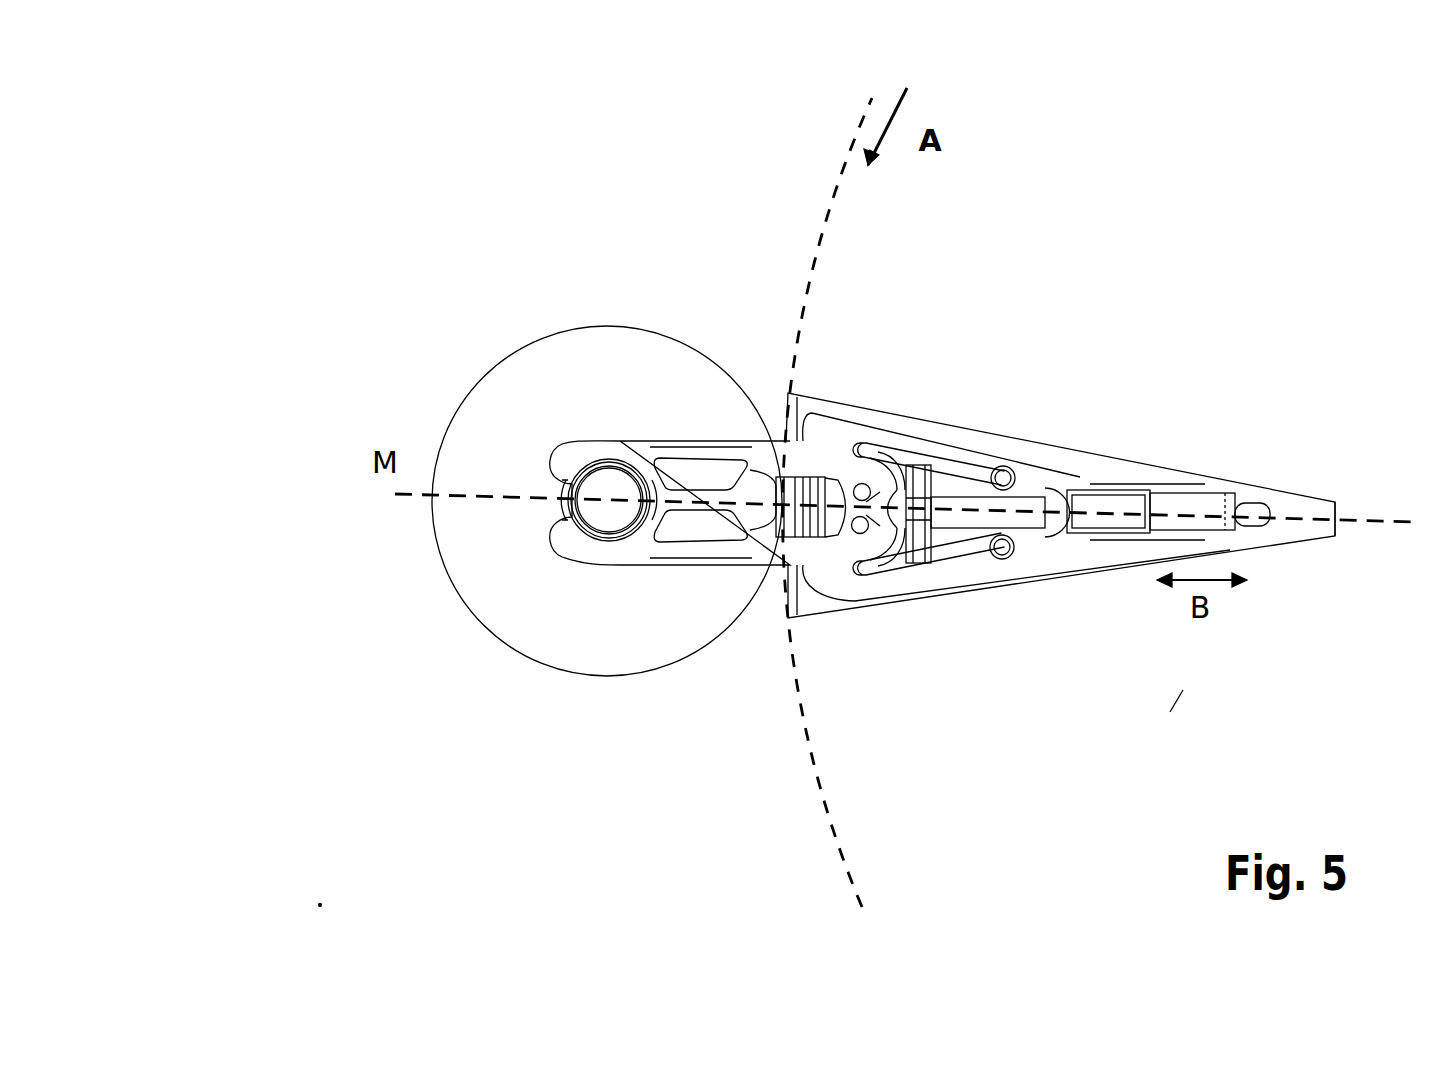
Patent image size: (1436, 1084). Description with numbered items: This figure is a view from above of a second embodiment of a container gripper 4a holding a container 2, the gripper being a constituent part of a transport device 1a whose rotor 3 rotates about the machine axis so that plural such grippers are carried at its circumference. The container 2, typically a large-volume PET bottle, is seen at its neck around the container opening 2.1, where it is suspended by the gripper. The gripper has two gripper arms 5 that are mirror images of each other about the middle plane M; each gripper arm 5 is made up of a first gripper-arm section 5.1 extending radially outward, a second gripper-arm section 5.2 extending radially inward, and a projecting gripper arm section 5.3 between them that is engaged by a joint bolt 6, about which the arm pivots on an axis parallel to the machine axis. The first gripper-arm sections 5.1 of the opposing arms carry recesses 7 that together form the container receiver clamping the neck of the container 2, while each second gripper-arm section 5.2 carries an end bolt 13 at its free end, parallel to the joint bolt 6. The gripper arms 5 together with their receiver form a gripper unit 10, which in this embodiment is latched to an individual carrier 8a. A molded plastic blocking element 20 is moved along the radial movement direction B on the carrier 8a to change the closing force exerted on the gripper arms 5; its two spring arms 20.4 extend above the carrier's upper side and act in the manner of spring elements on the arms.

The transport device 1a is at (425, 195).
The container 2 is at (495, 397).
The container opening 2.1 is at (598, 505).
The rotor 3 is at (821, 202).
The container gripper 4a is at (348, 433).
The gripper arm 5 is at (710, 435).
The first gripper-arm section 5.1 is at (621, 440).
The second gripper-arm section 5.2 is at (930, 448).
The projecting gripper arm section 5.3 is at (882, 556).
The joint bolt 6 is at (852, 502).
The recess 7 is at (598, 463).
The carrier 8a is at (1283, 542).
The gripper unit 10 is at (852, 385).
The end bolt 13 is at (1005, 466).
The blocking element 20 is at (1177, 495).
The spring arms 20.4 is at (1015, 469).